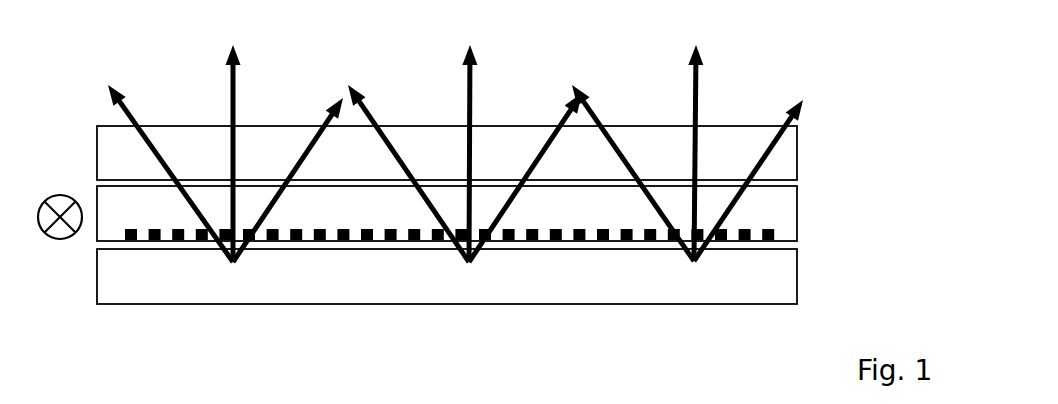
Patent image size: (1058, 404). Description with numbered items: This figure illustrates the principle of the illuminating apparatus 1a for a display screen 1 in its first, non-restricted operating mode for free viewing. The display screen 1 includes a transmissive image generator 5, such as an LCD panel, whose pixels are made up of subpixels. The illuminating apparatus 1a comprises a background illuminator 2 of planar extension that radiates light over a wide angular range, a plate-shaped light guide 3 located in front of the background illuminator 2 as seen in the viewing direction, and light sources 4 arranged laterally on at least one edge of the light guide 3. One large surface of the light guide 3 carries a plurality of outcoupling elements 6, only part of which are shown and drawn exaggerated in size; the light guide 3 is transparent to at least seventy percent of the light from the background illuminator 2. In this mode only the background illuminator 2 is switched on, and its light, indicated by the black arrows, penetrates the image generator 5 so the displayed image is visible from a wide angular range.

The display screen 1 is at (502, 239).
The illuminating apparatus 1a is at (480, 269).
The background illuminator 2 is at (447, 276).
The light guide 3 is at (447, 213).
The light sources 4 is at (62, 188).
The image generator 5 is at (447, 153).
The outcoupling elements 6 is at (277, 241).